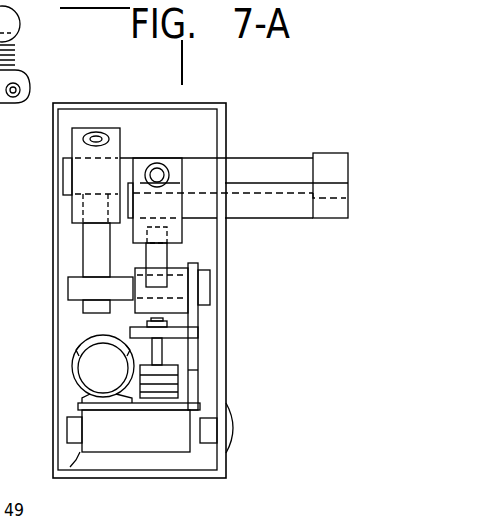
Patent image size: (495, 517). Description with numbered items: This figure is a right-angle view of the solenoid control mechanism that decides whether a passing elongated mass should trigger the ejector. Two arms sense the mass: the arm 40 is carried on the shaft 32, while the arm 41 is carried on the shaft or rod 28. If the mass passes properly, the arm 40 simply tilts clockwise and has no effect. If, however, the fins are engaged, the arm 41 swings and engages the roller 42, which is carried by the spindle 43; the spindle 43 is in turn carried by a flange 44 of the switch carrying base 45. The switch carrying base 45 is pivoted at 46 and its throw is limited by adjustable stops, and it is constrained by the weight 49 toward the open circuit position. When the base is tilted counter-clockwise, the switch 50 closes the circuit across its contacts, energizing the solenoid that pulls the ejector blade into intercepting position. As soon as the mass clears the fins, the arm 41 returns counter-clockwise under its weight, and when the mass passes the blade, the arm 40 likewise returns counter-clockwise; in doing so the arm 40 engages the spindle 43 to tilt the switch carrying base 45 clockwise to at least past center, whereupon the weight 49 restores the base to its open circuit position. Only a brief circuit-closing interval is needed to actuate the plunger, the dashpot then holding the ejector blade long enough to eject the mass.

The shaft or rod 28 is at (273, 208).
The shaft 32 is at (67, 177).
The arm 40 is at (90, 250).
The arm 41 is at (160, 260).
The roller 42 is at (139, 266).
The spindle 43 is at (72, 287).
The flange 44 is at (192, 352).
The switch carrying base 45 is at (152, 407).
The pivot 46 is at (72, 430).
The weight 49 is at (173, 388).
The switch 50 is at (85, 372).